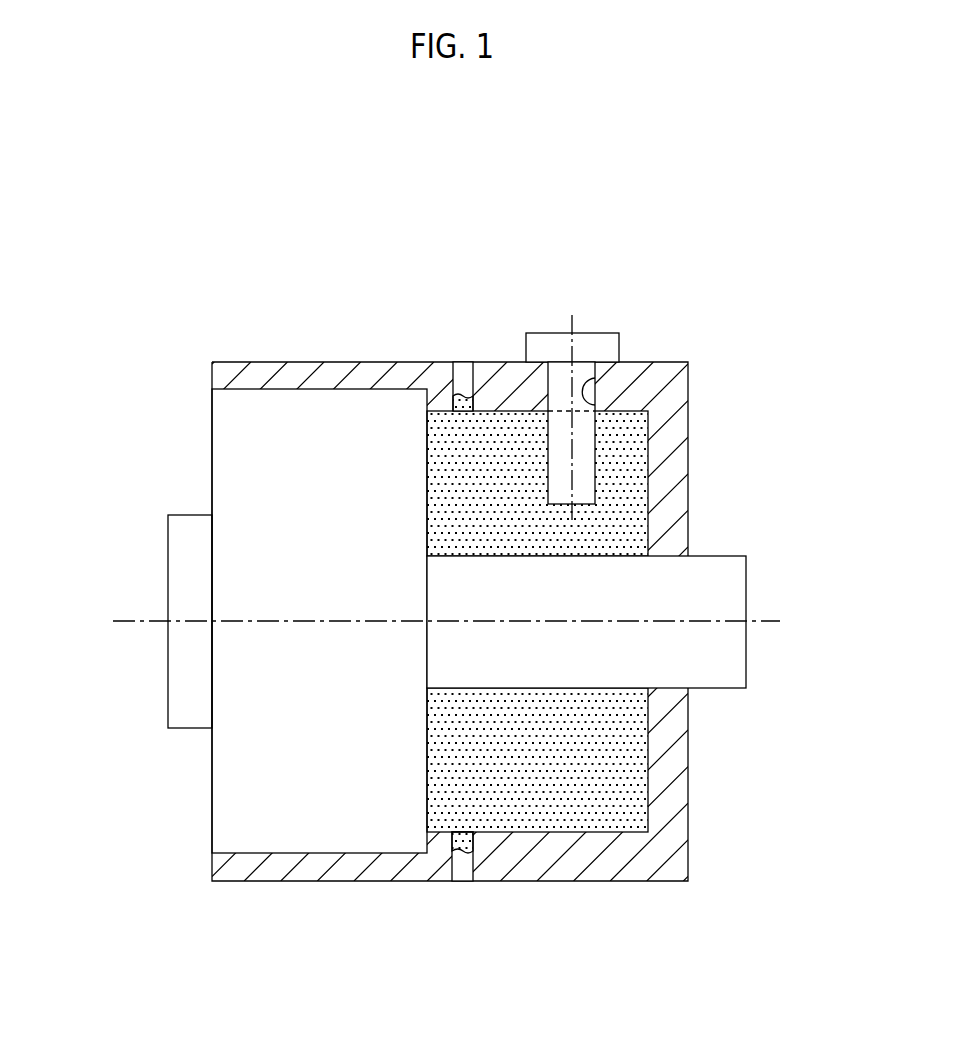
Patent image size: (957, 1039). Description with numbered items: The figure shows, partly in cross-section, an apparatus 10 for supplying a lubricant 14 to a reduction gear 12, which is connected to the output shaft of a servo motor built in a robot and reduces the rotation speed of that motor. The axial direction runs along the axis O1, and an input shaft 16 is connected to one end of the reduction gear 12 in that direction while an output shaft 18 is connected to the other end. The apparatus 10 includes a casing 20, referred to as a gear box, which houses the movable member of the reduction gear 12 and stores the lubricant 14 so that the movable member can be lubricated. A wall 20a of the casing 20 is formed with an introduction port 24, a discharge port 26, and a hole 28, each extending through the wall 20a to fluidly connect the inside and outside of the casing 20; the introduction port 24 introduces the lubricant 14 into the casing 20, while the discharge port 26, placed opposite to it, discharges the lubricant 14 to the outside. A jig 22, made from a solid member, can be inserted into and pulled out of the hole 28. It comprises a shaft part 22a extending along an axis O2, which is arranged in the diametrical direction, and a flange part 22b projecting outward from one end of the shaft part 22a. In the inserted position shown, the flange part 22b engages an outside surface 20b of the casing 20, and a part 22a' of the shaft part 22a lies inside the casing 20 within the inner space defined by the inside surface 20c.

The apparatus 10 is at (706, 221).
The reduction gear 12 is at (264, 400).
The lubricant 14 is at (442, 469).
The input shaft 16 is at (730, 578).
The output shaft 18 is at (180, 525).
The casing 20 is at (705, 387).
The wall 20a is at (495, 376).
The outside surface 20b is at (320, 361).
The inside surface 20c is at (650, 752).
The jig 22 is at (652, 355).
The shaft part 22a is at (579, 366).
The part of the shaft part 22a' is at (673, 465).
The flange part 22b is at (552, 343).
The introduction port 24 is at (460, 868).
The discharge port 26 is at (465, 378).
The hole 28 is at (586, 396).
The axis O1 is at (123, 620).
The axis O2 is at (572, 478).